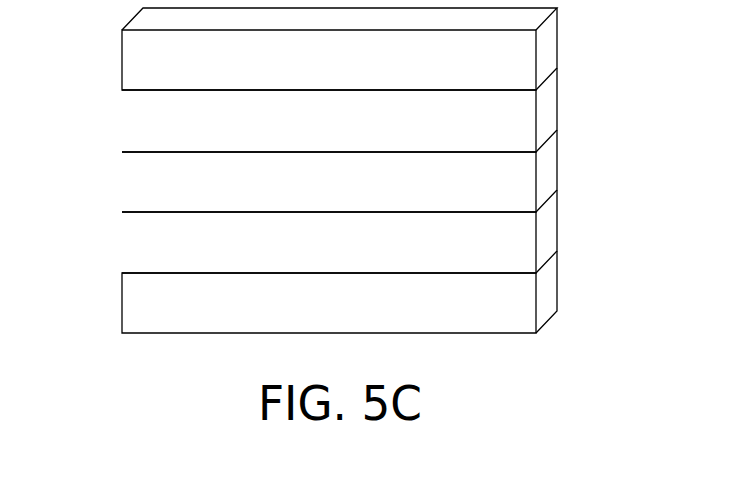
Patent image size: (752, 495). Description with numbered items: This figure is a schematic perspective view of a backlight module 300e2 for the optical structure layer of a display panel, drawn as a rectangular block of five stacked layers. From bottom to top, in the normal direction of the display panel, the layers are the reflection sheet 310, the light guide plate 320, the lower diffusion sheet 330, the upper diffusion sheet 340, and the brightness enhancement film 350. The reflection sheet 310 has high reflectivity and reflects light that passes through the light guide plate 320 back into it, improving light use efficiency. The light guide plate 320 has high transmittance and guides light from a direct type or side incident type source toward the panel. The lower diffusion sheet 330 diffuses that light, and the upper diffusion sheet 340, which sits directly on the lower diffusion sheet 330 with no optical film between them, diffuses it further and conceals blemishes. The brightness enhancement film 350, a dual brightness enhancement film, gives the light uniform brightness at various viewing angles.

The backlight module 300e2 is at (354, 183).
The brightness enhancement film 350 is at (137, 48).
The upper diffusion sheet 340 is at (137, 113).
The lower diffusion sheet 330 is at (137, 177).
The light guide plate 320 is at (137, 247).
The reflection sheet 310 is at (137, 308).